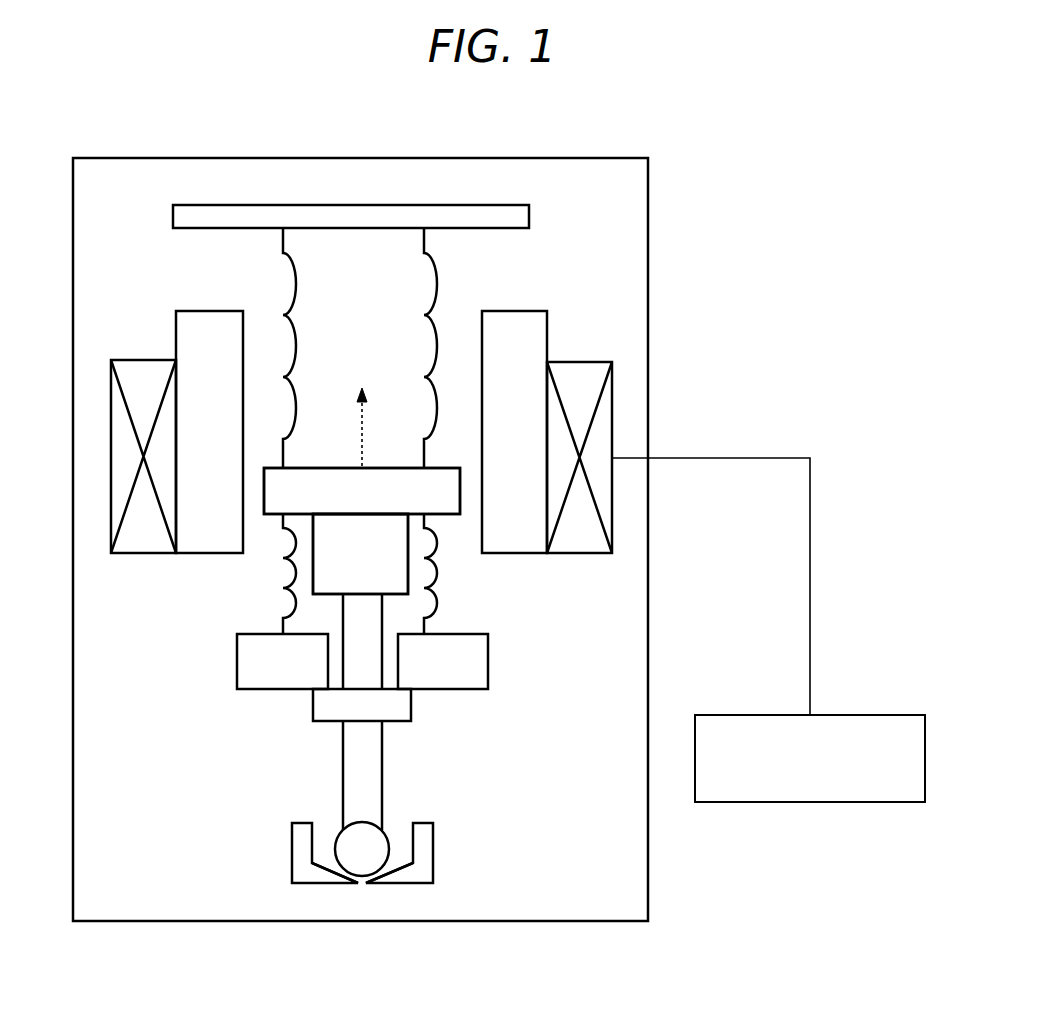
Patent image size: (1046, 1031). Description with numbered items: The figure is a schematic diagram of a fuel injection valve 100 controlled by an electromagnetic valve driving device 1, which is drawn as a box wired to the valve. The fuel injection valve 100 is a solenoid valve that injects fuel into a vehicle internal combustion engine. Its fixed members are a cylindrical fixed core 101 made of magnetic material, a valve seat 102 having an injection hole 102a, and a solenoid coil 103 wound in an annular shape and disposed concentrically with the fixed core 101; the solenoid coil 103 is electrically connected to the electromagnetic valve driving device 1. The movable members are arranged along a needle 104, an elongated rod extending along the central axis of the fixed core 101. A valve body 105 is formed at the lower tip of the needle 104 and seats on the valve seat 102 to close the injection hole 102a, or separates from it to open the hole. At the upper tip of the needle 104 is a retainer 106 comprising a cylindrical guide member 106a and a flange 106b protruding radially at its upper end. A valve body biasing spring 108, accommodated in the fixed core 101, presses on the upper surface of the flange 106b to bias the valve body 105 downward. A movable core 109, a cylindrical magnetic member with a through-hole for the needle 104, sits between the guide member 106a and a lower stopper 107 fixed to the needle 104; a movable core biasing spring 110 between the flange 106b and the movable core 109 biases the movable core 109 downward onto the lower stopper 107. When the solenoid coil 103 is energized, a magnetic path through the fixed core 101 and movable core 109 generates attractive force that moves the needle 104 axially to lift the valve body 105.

The electromagnetic valve driving device 1 is at (862, 715).
The fuel injection valve 100 is at (649, 256).
The fixed core 101 is at (515, 307).
The valve seat 102 is at (433, 848).
The injection hole 102a is at (361, 884).
The solenoid coil 103 is at (579, 358).
The needle 104 is at (382, 745).
The valve body 105 is at (386, 836).
The retainer 106 is at (452, 532).
The guide member 106a is at (408, 569).
The flange 106b is at (383, 466).
The lower stopper 107 is at (411, 703).
The valve body biasing spring 108 is at (296, 336).
The movable core 109 is at (488, 655).
The movable core biasing spring 110 is at (283, 560).